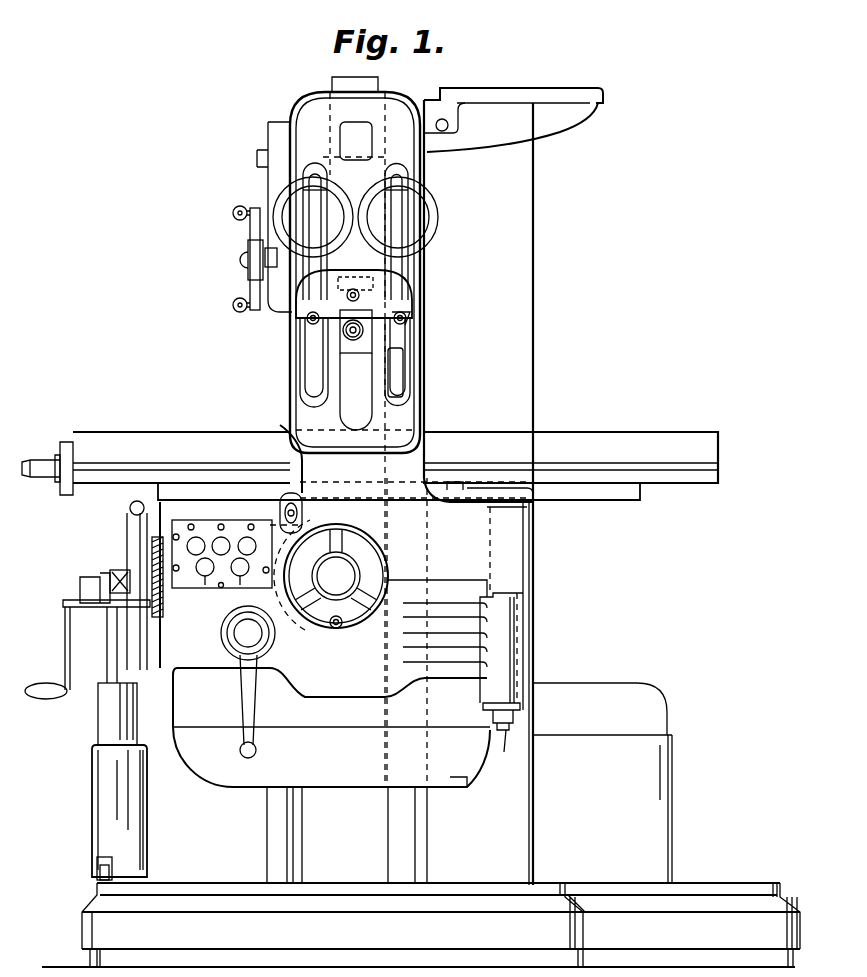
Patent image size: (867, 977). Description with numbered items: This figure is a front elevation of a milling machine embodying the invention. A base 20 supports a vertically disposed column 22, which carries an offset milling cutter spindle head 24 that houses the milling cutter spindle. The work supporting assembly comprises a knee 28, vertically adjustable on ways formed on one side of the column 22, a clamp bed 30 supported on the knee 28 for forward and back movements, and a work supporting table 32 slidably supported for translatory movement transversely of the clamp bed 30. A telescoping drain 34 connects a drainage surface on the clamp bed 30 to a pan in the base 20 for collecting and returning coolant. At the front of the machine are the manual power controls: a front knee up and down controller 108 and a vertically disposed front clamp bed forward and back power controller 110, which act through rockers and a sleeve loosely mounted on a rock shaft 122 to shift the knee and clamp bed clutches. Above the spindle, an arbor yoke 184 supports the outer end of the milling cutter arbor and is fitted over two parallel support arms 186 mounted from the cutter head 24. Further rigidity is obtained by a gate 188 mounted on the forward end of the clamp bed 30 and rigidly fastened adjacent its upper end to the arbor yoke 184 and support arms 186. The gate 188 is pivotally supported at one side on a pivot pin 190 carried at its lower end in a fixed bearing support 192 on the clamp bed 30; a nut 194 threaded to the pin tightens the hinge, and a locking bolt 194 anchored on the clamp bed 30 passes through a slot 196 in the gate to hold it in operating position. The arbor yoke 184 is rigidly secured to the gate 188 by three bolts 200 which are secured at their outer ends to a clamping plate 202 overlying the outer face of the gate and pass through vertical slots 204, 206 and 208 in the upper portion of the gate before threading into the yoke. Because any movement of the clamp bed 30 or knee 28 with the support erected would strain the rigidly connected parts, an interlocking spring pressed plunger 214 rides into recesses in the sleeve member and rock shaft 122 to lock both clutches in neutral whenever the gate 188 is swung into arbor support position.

The base 20 is at (715, 893).
The column 22 is at (536, 291).
The milling cutter spindle head 24 is at (277, 308).
The knee 28 is at (210, 750).
The clamp bed 30 is at (180, 602).
The work supporting table 32 is at (152, 433).
The telescoping drain 34 is at (102, 800).
The front knee up and down controller 108 is at (130, 577).
The front clamp bed forward and back power controller 110 is at (140, 533).
The rock shaft 122 is at (318, 529).
The arbor yoke 184 is at (397, 258).
The support arms 186 is at (398, 203).
The gate 188 is at (412, 448).
The pivot pin 190 is at (533, 503).
The fixed bearing support 192 is at (510, 650).
The nut / locking bolt 194 is at (285, 517).
The slot 196 is at (280, 425).
The bolts 200 is at (365, 305).
The clamping plate 202 is at (403, 318).
The vertical slot 204 is at (313, 353).
The vertical slot 206 is at (363, 393).
The vertical slot 208 is at (400, 367).
The spring pressed plunger 214 is at (297, 633).